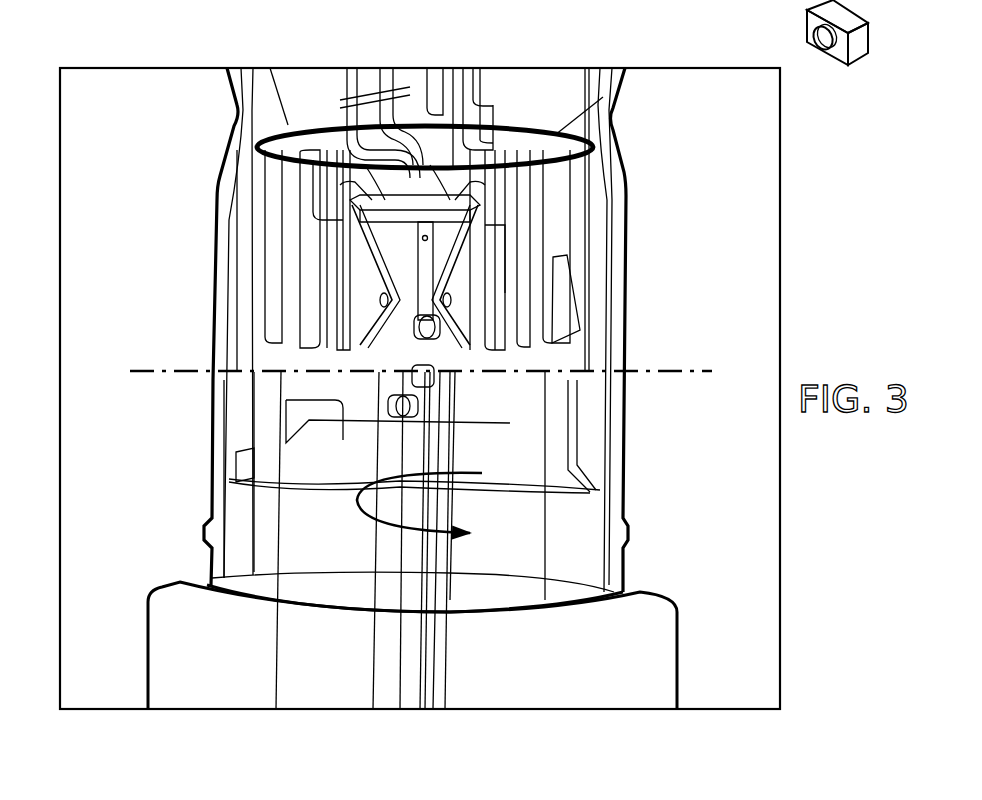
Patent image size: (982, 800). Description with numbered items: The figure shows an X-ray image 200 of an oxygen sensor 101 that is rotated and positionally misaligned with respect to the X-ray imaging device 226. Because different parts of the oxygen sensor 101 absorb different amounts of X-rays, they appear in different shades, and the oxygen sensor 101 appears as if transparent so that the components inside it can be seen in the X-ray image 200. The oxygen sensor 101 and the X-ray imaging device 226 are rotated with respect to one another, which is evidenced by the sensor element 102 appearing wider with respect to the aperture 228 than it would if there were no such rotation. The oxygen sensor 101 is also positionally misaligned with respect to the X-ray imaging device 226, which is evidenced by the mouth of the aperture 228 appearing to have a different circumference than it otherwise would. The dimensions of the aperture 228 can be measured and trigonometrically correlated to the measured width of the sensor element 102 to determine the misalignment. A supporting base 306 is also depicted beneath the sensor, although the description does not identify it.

The X-ray image 200 is at (104, 50).
The oxygen sensor 101 is at (202, 118).
The X-ray imaging device 226 is at (859, 66).
The sensor element 102 is at (422, 407).
The aperture 228 is at (577, 491).
The base / rotary holder 306 is at (658, 657).